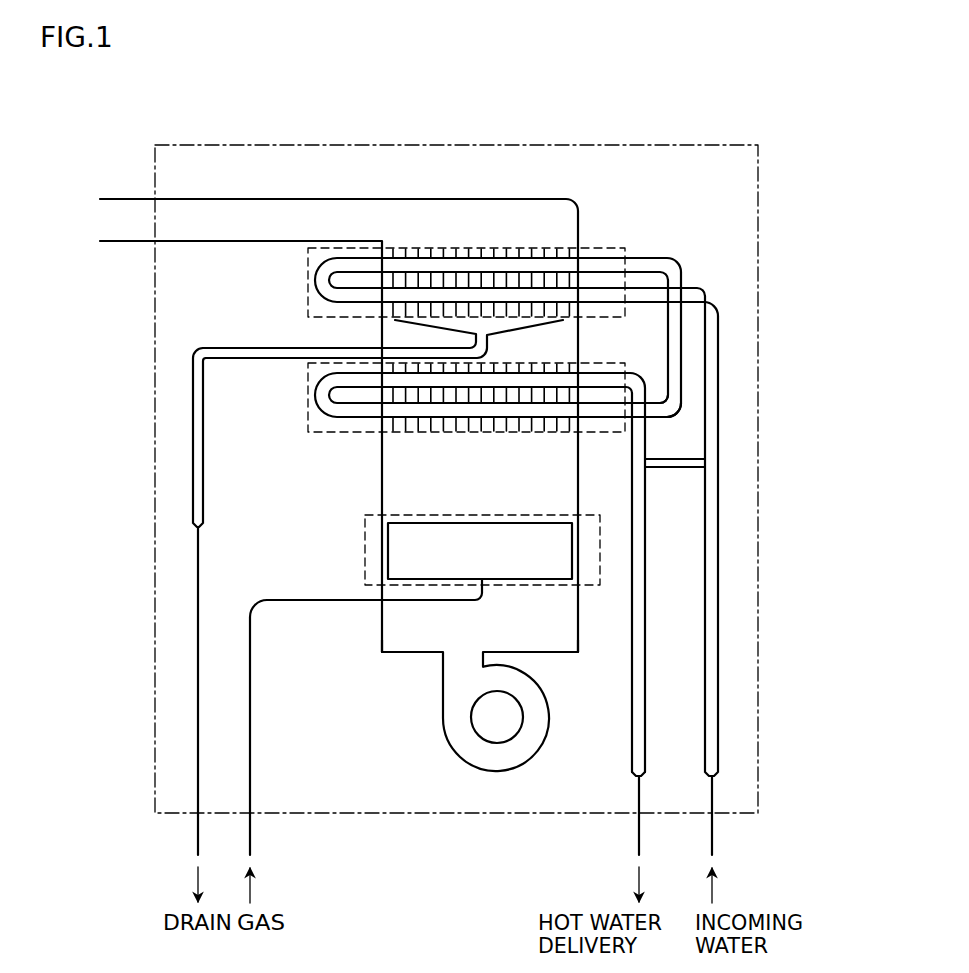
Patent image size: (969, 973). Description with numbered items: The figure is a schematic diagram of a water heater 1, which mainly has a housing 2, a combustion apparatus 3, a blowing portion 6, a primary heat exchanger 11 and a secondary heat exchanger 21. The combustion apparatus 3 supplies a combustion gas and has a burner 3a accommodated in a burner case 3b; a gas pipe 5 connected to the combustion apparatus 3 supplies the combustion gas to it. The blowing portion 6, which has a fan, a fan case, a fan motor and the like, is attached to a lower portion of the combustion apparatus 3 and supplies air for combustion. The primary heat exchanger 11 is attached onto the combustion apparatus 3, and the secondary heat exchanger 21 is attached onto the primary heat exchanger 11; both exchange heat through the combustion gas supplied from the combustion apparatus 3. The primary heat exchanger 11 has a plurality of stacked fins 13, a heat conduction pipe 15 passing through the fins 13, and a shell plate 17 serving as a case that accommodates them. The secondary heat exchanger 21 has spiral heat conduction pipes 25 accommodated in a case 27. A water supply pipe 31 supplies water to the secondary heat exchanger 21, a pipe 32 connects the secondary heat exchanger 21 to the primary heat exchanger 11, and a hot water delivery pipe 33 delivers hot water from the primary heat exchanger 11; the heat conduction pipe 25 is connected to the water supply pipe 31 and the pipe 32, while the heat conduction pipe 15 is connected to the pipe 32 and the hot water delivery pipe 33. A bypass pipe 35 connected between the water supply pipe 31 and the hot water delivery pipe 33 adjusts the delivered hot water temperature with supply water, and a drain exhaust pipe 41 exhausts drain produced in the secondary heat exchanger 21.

The water heater 1 is at (709, 117).
The housing 2 is at (760, 186).
The combustion apparatus 3 is at (600, 530).
The burner 3a is at (553, 552).
The burner case 3b is at (580, 579).
The gas pipe 5 is at (312, 602).
The blowing portion 6 is at (496, 722).
The primary heat exchanger 11 is at (467, 440).
The fins 13 is at (385, 424).
The heat conduction pipe 15 is at (433, 428).
The shell plate 17 is at (585, 435).
The secondary heat exchanger 21 is at (625, 248).
The heat conduction pipe 25 is at (430, 300).
The case 27 is at (563, 320).
The water supply pipe 31 is at (713, 680).
The pipe 32 is at (674, 330).
The hot water delivery pipe 33 is at (641, 728).
The bypass pipe 35 is at (680, 458).
The drain exhaust pipe 41 is at (192, 433).